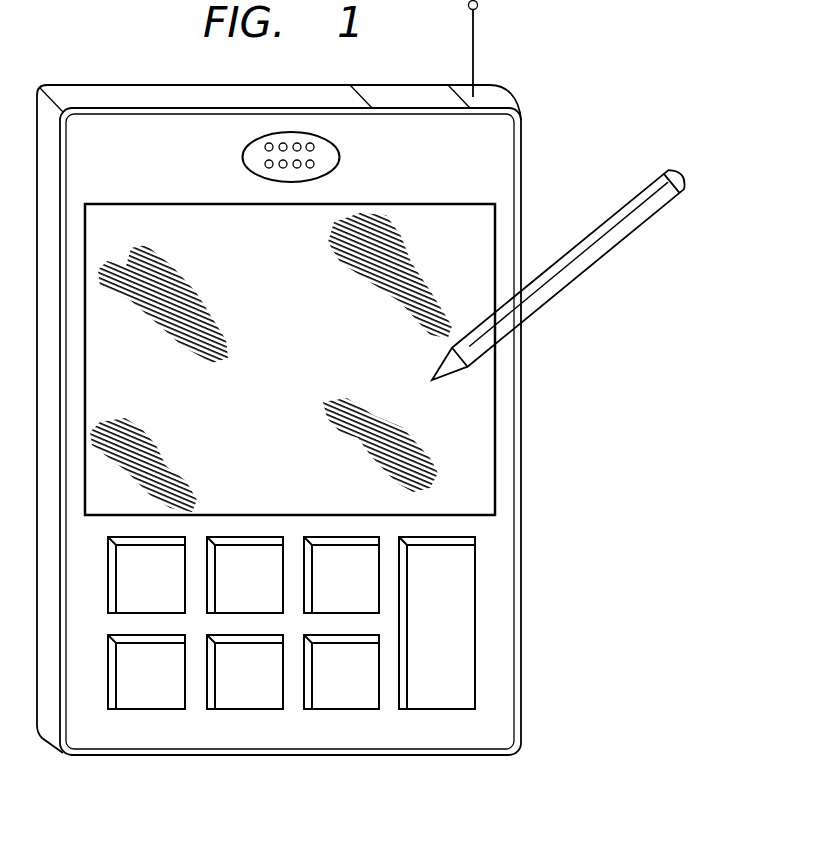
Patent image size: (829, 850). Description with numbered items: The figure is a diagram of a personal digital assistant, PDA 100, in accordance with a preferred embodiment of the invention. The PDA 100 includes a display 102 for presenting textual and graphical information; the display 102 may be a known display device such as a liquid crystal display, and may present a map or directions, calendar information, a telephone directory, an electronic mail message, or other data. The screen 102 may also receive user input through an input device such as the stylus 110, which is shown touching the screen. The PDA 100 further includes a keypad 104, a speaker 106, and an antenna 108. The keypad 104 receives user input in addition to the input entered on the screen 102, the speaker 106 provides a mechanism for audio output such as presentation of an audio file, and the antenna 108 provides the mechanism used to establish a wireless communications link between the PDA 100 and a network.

The personal digital assistant (PDA) 100 is at (522, 197).
The display 102 is at (314, 361).
The keypad 104 is at (530, 532).
The speaker 106 is at (339, 157).
The antenna 108 is at (474, 52).
The stylus 110 is at (681, 172).